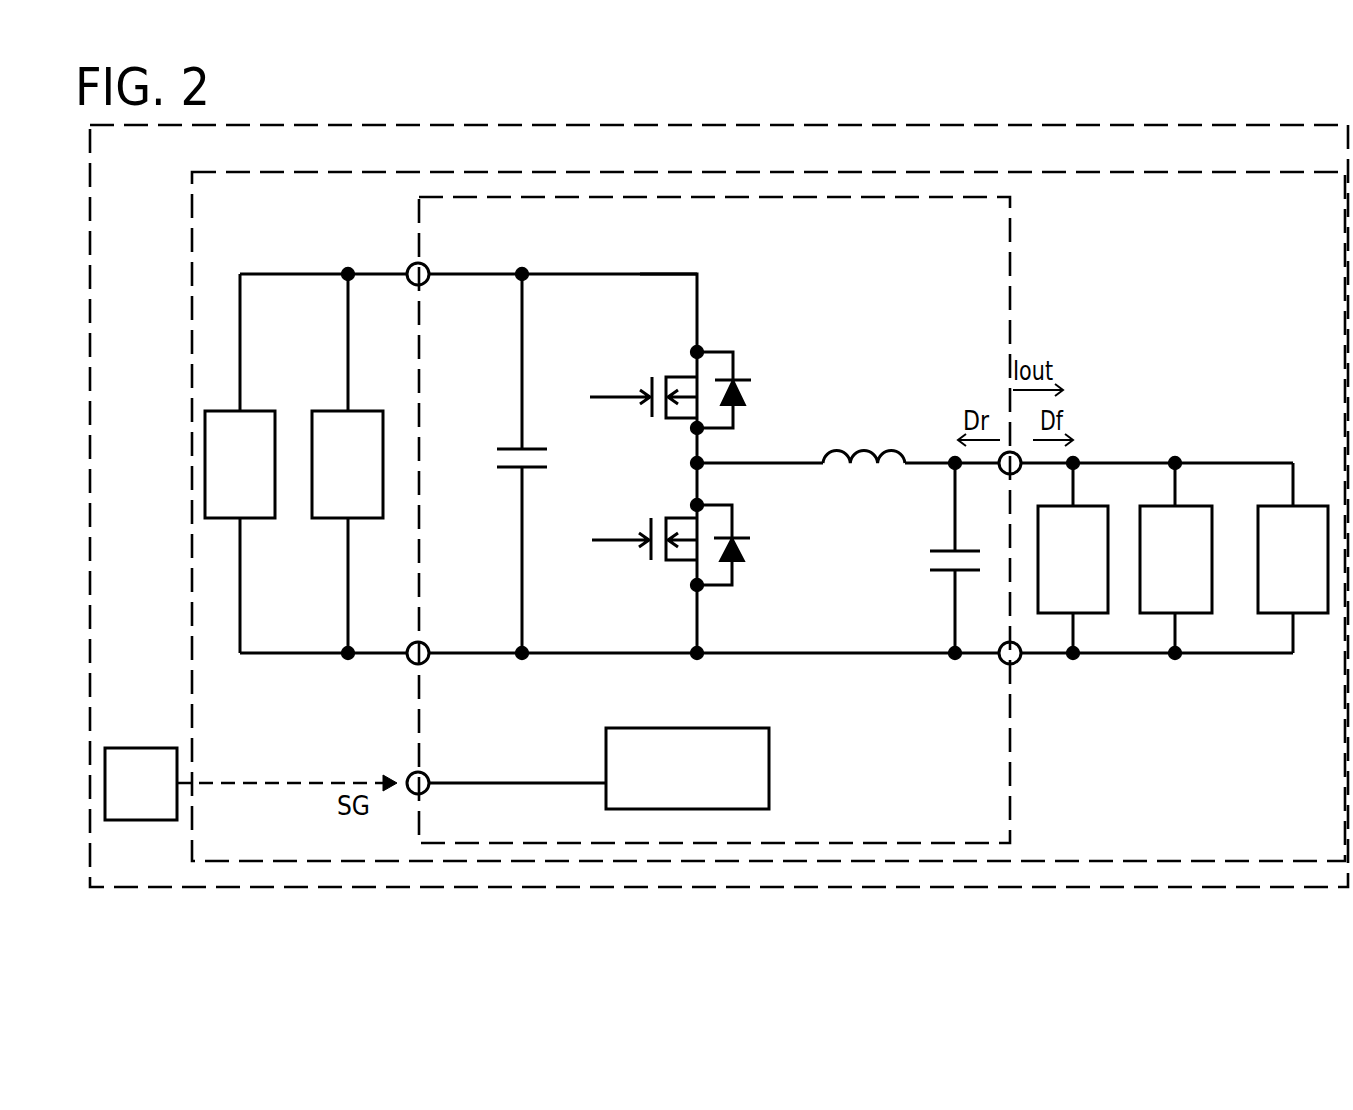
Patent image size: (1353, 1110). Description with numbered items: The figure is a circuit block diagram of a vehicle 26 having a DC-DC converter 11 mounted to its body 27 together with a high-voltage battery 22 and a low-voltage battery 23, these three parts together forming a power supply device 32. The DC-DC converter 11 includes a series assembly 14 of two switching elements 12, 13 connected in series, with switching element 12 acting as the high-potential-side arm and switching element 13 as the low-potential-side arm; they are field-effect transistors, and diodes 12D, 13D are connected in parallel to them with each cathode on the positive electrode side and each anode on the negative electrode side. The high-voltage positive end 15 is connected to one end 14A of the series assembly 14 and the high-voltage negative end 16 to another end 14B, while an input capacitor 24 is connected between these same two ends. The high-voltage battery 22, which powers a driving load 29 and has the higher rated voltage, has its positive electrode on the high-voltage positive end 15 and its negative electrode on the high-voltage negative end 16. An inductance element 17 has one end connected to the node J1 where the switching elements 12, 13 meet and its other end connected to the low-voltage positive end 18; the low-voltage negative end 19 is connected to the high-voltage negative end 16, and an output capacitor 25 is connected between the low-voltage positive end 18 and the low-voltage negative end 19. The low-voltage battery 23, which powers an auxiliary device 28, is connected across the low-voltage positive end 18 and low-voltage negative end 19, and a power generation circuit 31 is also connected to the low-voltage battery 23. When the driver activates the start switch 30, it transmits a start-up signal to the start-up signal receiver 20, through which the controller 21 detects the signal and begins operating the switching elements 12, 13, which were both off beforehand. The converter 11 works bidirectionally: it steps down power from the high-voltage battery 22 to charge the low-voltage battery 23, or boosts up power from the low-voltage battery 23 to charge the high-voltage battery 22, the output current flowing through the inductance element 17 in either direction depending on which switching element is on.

The DC-DC converter 11 is at (1010, 270).
The switching element 12 is at (648, 382).
The diode 12D is at (738, 389).
The switching element 13 is at (648, 532).
The diode 13D is at (738, 542).
The series assembly 14 is at (706, 495).
The one end of series assembly 14A is at (698, 273).
The another end of series assembly 14B is at (692, 658).
The high-voltage positive end 15 is at (408, 260).
The high-voltage negative end 16 is at (410, 670).
The inductance element 17 is at (867, 437).
The low-voltage positive end 18 is at (1003, 468).
The low-voltage negative end 19 is at (1017, 663).
The start-up signal receiver 20 is at (422, 815).
The controller 21 is at (769, 770).
The high-voltage battery 22 is at (322, 418).
The low-voltage battery 23 is at (1093, 500).
The input capacitor 24 is at (503, 437).
The output capacitor 25 is at (920, 563).
The vehicle 26 is at (719, 541).
The body 27 is at (540, 887).
The auxiliary device 28 is at (1202, 618).
The driving load 29 is at (205, 515).
The start switch 30 is at (145, 748).
The power generation circuit 31 is at (1317, 618).
The power supply device 32 is at (1050, 172).
The node J1 is at (690, 463).